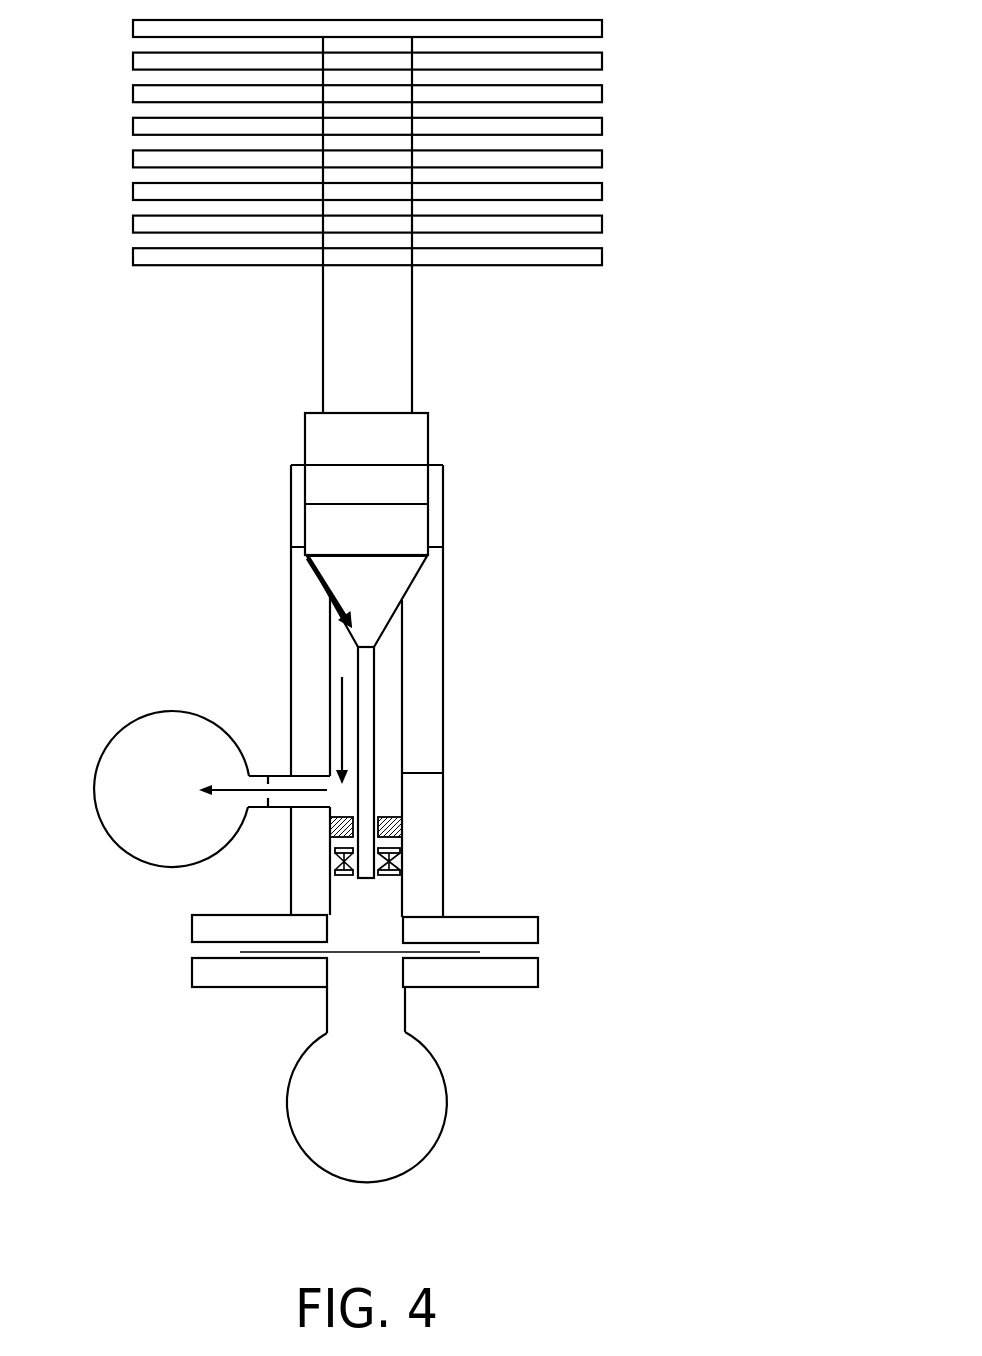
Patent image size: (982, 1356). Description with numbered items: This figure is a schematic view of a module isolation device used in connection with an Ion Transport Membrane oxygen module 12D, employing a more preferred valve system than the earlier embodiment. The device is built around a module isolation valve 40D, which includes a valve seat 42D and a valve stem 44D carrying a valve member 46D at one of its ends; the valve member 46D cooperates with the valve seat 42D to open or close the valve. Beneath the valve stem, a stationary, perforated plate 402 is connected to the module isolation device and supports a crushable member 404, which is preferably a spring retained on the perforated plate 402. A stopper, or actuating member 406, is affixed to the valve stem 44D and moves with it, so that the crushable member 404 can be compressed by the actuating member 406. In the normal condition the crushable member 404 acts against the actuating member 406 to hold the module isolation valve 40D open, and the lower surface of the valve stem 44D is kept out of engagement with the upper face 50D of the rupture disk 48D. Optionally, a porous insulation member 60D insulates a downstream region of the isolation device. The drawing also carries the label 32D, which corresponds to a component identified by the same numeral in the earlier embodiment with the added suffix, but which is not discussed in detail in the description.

The Ion Transport Membrane oxygen module 12D is at (771, 203).
The module isolation valve 40D is at (700, 632).
The valve seat 42D is at (423, 572).
The valve stem 44D is at (366, 730).
The valve member 46D is at (347, 577).
The porous insulation member 60D is at (392, 814).
The actuating member 406 is at (403, 850).
The crushable member 404 is at (405, 863).
The perforated plate 402 is at (387, 885).
The reservoir 32D is at (365, 882).
The rupture disk 48D is at (444, 950).
The upper face 50D is at (262, 955).